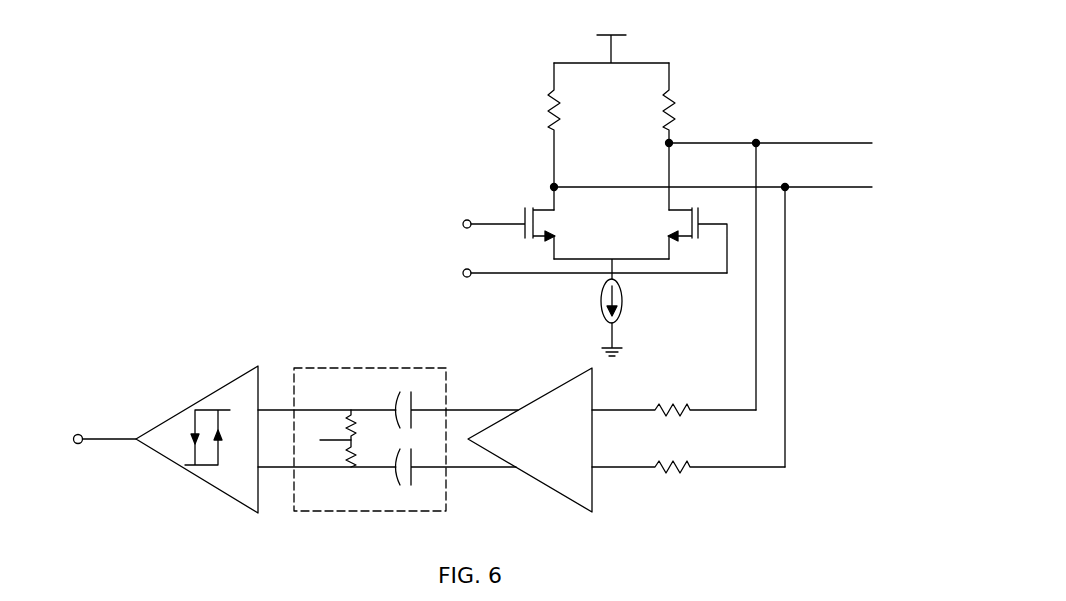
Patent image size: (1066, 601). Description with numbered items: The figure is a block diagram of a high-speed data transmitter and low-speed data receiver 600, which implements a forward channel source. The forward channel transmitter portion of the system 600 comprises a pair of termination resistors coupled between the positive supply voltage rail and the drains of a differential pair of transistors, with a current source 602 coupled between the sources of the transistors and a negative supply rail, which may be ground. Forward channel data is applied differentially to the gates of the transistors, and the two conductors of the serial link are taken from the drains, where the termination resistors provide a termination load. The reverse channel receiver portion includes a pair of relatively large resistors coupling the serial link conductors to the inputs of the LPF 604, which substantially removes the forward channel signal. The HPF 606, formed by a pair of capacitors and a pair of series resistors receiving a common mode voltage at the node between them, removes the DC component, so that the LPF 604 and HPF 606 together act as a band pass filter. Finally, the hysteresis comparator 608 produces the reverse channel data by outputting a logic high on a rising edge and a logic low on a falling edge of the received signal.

The high-speed data transmitter and low-speed data receiver 600 is at (291, 86).
The current source 602 is at (623, 300).
The LPF 604 is at (560, 385).
The HPF 606 is at (378, 368).
The hysteresis comparator 608 is at (241, 375).